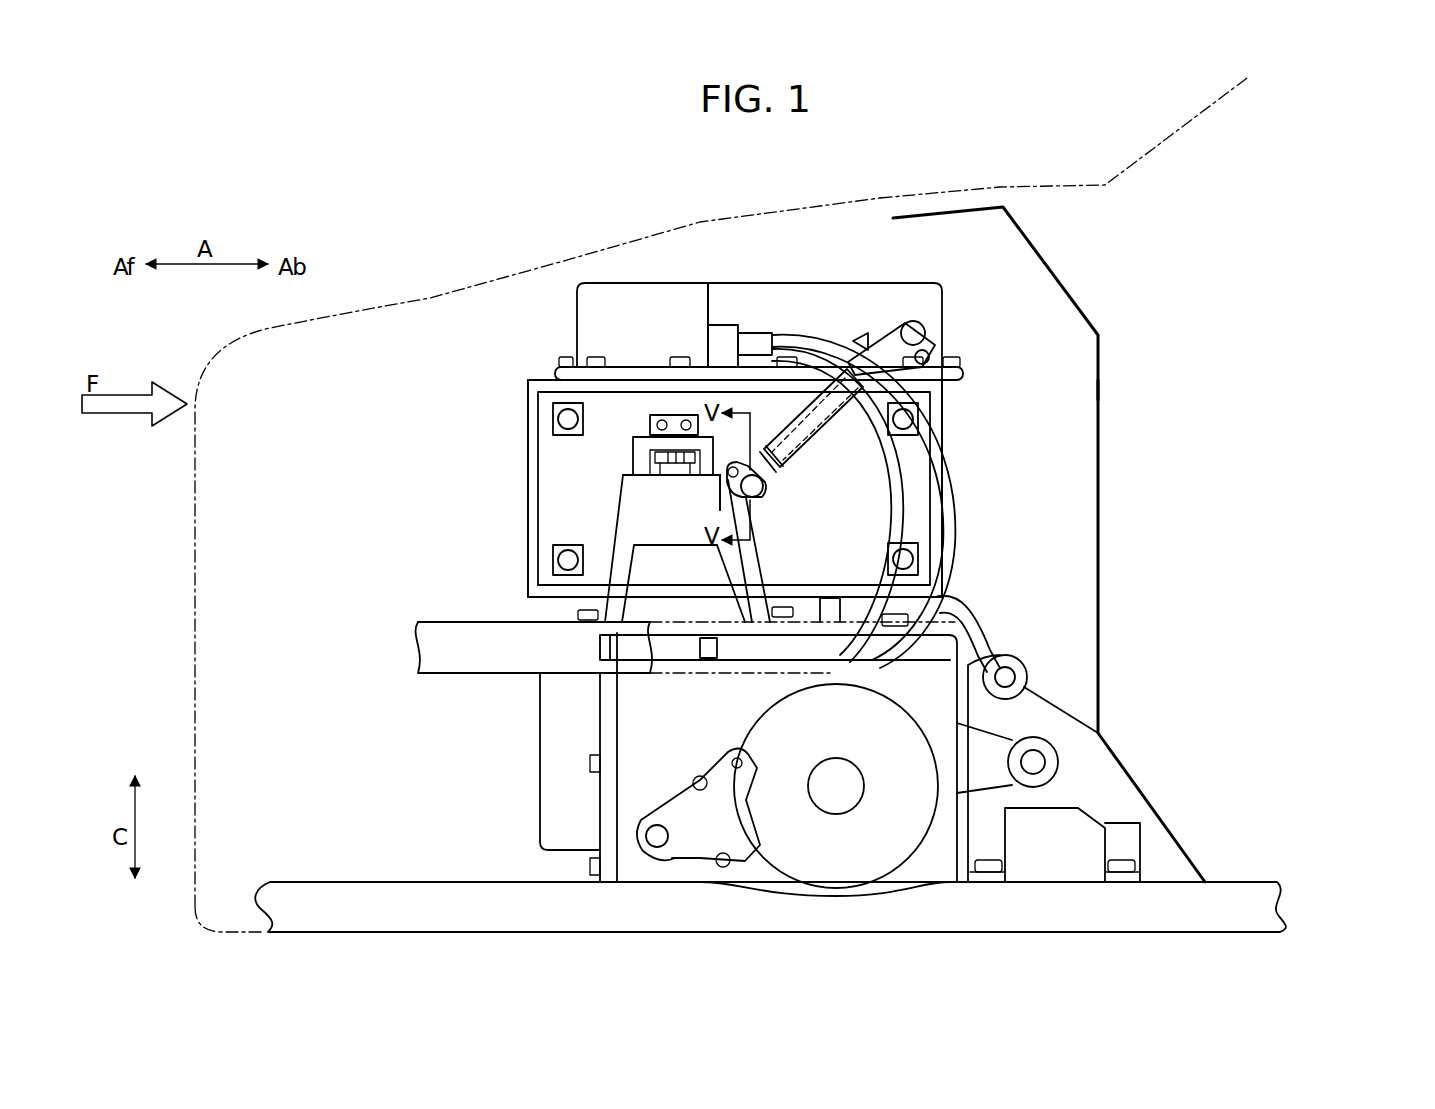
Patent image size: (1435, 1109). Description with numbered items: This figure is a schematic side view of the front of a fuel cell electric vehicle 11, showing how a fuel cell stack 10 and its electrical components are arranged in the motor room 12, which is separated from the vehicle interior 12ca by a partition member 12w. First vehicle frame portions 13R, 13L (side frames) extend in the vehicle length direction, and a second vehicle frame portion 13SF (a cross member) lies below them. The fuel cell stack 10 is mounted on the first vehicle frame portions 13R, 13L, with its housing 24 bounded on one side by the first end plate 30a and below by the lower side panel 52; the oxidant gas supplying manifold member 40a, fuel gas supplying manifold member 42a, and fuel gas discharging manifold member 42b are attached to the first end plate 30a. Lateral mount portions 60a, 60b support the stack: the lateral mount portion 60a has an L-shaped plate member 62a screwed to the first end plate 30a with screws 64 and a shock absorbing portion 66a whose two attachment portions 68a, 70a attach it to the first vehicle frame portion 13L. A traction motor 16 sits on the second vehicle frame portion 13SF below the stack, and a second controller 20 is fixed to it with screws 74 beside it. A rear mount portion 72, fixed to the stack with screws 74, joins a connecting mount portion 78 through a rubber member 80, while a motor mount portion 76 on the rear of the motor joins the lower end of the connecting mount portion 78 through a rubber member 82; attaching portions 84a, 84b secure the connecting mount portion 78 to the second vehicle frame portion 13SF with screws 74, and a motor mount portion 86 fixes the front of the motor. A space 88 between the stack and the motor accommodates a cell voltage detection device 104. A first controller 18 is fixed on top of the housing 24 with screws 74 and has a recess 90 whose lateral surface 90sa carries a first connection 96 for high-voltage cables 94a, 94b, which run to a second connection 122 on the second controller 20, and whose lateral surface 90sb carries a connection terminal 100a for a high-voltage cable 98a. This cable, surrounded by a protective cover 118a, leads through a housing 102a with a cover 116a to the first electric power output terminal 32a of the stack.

The fuel cell stack 10 is at (619, 372).
The fuel cell electric vehicle 11 is at (968, 188).
The motor room 12 is at (455, 298).
The partition member 12w is at (1100, 470).
The vehicle interior 12ca is at (1118, 388).
The second vehicle frame portion 13SF is at (405, 880).
The first vehicle frame portion 13L is at (478, 660).
The first vehicle frame portion 13R is at (534, 676).
The traction motor 16 is at (788, 888).
The first controller 18 is at (655, 280).
The second controller 20 is at (538, 790).
The housing 24 is at (524, 490).
The first end plate 30a is at (552, 498).
The first electric power output terminal 32a is at (766, 490).
The oxidant gas supplying manifold member 40a is at (553, 558).
The fuel gas supplying manifold member 42a is at (920, 556).
The fuel gas discharging manifold member 42b is at (553, 418).
The lower side panel 52 is at (848, 594).
The lateral mount portion 60a is at (616, 466).
The lateral mount portion 60b is at (593, 468).
The plate member 62a is at (675, 440).
The screws 64 is at (650, 425).
The shock absorbing portion 66a is at (648, 497).
The attachment portion 68a is at (760, 577).
The attachment portion 70a is at (628, 578).
The rear mount portion 72 is at (985, 630).
The screws 74 is at (555, 368).
The motor mount portion 76 is at (975, 776).
The connecting mount portion 78 is at (1055, 724).
The rubber member 80 is at (1027, 672).
The rubber member 82 is at (1060, 758).
The attaching portion 84a is at (1010, 840).
The attaching portion 84b is at (1130, 835).
The motor mount portion 86 is at (684, 808).
The space 88 is at (678, 616).
The recess 90 is at (817, 293).
The lateral surface 90sa is at (715, 302).
The lateral surface 90sb is at (848, 325).
The high-voltage cable 94a is at (947, 490).
The high-voltage cable 94b is at (897, 478).
The first connection 96 is at (722, 352).
The high-voltage cable 98a is at (810, 396).
The connection terminal 100a is at (927, 340).
The housing 102a is at (742, 455).
The cell voltage detection device 104 is at (832, 610).
The cover 116a is at (754, 500).
The protective cover 118a is at (776, 462).
The second connection 122 is at (708, 662).